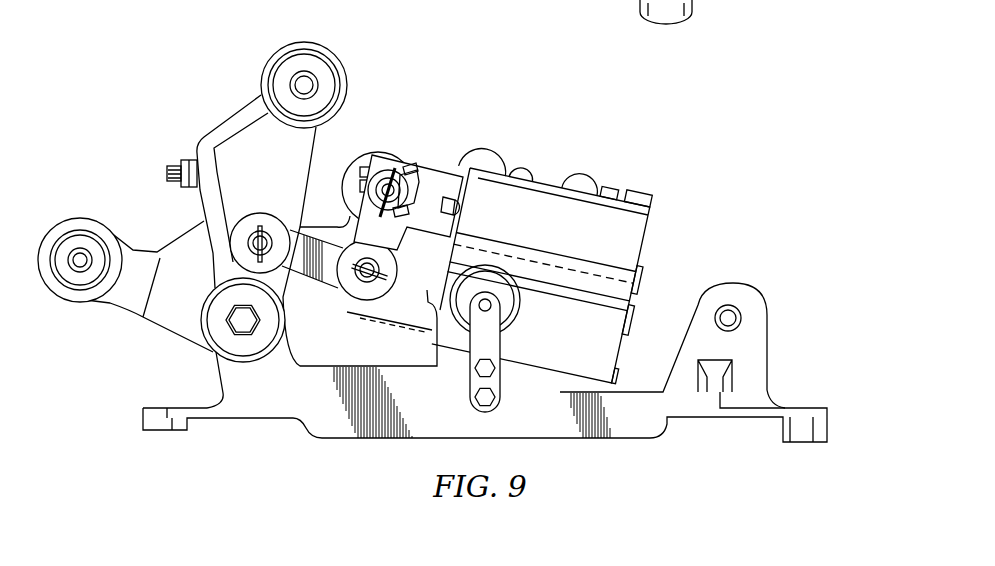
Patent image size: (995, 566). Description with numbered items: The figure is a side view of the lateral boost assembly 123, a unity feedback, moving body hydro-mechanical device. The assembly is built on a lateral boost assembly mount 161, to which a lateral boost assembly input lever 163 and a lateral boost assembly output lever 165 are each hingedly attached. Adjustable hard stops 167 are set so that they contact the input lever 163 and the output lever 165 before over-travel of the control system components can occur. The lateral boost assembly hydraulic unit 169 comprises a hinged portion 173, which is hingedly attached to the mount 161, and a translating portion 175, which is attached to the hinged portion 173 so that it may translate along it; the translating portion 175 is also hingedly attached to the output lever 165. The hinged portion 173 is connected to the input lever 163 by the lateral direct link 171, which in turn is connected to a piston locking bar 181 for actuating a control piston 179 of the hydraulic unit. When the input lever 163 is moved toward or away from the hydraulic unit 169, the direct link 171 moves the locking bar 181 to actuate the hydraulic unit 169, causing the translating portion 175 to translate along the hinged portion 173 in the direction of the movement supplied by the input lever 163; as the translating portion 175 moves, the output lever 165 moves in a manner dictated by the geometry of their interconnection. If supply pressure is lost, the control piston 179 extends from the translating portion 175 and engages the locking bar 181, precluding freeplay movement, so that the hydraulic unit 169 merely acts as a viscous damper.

The lateral boost assembly mount 161 is at (641, 427).
The lateral boost assembly 123 is at (203, 100).
The lateral boost assembly input lever 163 is at (305, 41).
The lateral boost assembly adjustable hard stops 167 is at (181, 158).
The lateral boost assembly output lever 165 is at (80, 219).
The lateral direct link 171 is at (326, 285).
The lateral boost assembly hydraulic unit 169 is at (553, 185).
The translating portion 175 is at (578, 189).
The control piston 179 is at (455, 207).
The piston locking bar 181 is at (433, 175).
The hinged portion 173 is at (427, 352).